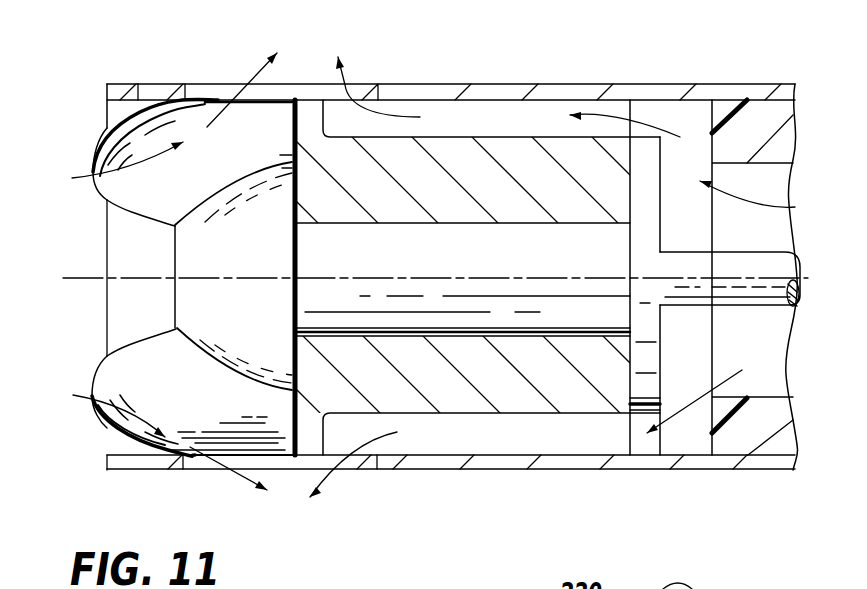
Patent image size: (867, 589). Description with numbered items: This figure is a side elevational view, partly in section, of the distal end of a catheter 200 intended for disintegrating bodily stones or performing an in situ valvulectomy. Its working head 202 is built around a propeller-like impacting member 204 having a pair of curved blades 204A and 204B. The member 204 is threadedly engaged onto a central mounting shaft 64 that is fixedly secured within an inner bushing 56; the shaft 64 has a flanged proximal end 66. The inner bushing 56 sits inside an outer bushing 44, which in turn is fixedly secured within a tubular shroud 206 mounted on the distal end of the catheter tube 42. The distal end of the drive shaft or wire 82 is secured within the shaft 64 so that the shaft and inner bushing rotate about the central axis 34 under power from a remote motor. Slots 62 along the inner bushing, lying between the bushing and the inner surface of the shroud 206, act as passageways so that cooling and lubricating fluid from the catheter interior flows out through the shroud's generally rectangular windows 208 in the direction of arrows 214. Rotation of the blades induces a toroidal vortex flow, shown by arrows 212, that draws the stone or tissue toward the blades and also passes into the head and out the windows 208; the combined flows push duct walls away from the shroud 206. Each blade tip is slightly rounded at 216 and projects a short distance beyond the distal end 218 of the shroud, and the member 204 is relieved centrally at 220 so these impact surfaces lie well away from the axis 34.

The central axis 34 is at (93, 278).
The catheter tube 42 is at (723, 107).
The outer bushing 44 is at (642, 110).
The inner bushing 56 is at (592, 400).
The slots 62 is at (447, 113).
The central mounting shaft 64 is at (467, 320).
The flanged proximal end 66 is at (667, 388).
The drive shaft or wire 82 is at (757, 303).
The catheter 200 is at (503, 60).
The working head 202 is at (527, 83).
The propeller-like impacting member 204 is at (183, 318).
The blade 204A is at (147, 110).
The blade 204B is at (100, 412).
The tubular shroud 206 is at (637, 463).
The windows or slots 208 is at (215, 88).
The arrows 212 is at (247, 95).
The arrows 214 is at (345, 78).
The rounded blade tip 216 is at (97, 157).
The distal end of the shroud 218 is at (105, 97).
The central relief 220 is at (173, 265).